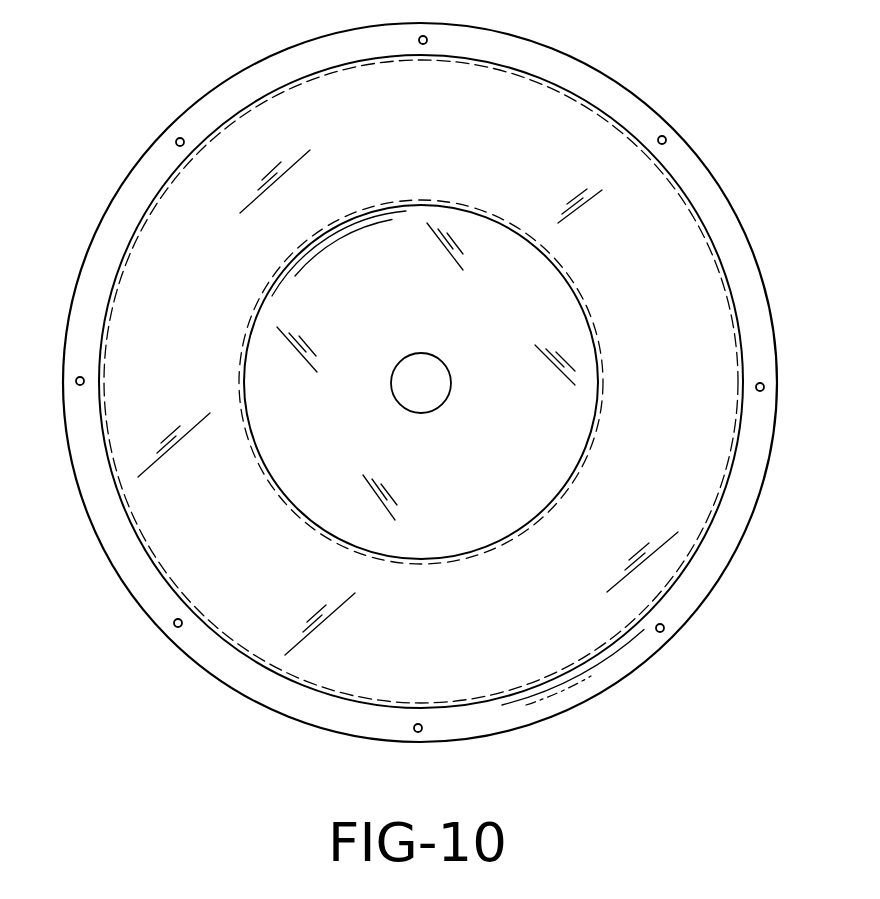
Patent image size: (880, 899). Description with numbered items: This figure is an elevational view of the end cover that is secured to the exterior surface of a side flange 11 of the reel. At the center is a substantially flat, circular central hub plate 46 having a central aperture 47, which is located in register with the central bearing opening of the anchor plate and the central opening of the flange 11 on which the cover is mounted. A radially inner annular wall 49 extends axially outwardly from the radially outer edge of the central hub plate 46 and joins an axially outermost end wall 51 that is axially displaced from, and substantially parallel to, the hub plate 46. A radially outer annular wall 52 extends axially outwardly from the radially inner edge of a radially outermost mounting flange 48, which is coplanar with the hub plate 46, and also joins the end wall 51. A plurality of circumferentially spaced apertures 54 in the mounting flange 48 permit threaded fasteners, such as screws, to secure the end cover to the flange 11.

The flange 11 is at (73, 381).
The central hub plate 46 is at (485, 480).
The central aperture 47 is at (407, 352).
The mounting flange 48 is at (563, 690).
The radially inner annular wall 49 is at (600, 334).
The axially outermost end wall 51 is at (205, 286).
The radially outer annular wall 52 is at (307, 79).
The circumferentially spaced apertures 54 is at (666, 628).